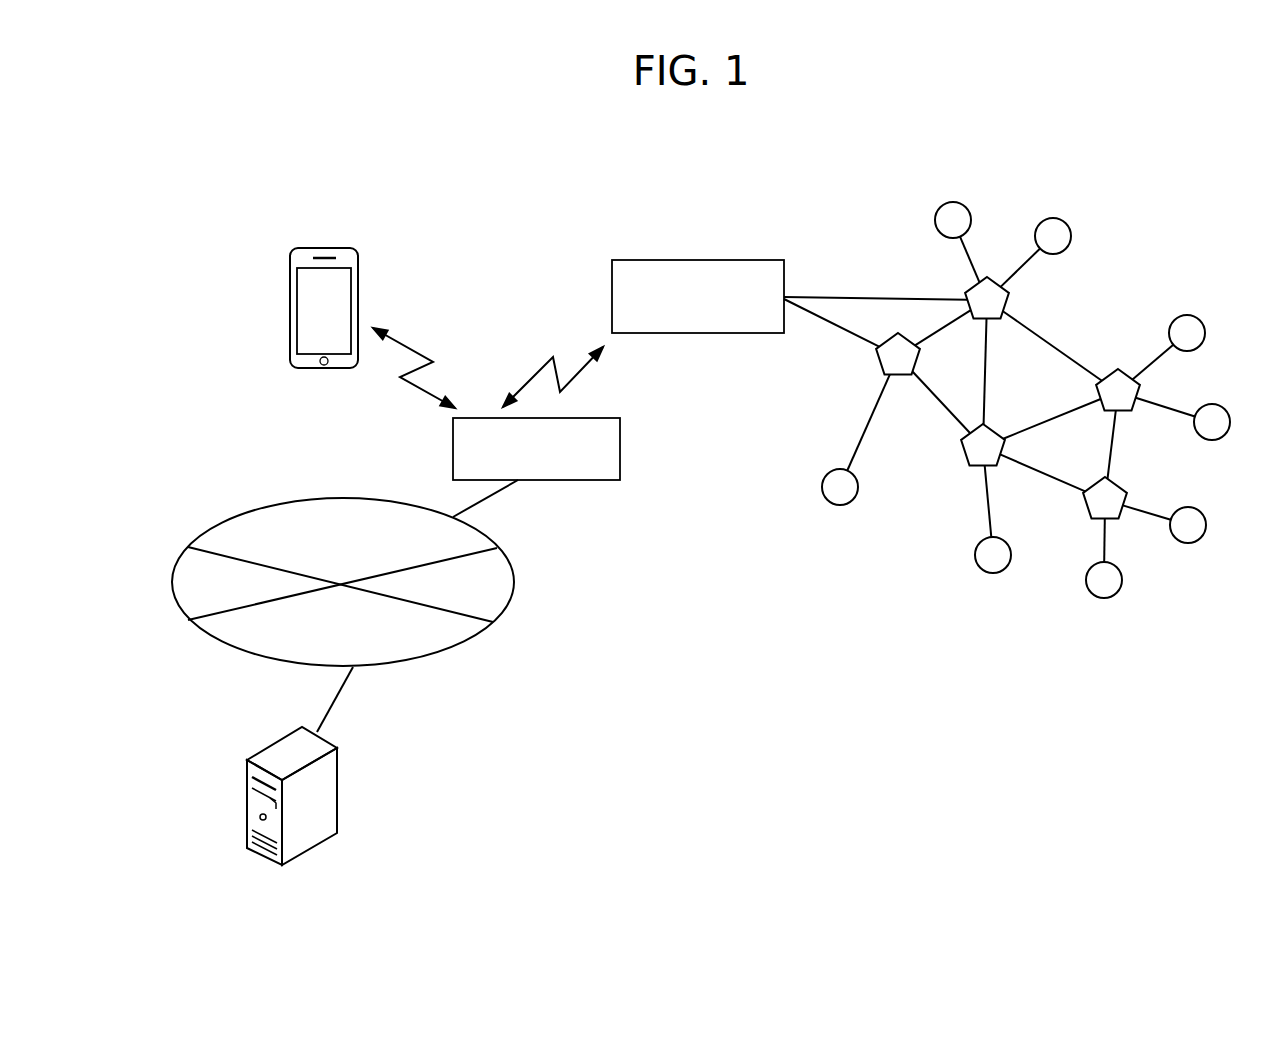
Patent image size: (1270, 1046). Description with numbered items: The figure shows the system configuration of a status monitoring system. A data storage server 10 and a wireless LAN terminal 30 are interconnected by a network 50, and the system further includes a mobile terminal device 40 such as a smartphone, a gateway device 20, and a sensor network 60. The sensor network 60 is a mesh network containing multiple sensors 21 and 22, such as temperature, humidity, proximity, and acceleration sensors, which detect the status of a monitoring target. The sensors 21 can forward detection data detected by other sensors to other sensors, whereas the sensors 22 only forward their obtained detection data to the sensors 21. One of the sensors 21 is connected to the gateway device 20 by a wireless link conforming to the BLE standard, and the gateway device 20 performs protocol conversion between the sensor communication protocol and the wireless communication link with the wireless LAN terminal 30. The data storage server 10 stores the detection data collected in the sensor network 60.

The data storage server 10 is at (337, 786).
The gateway device 20 is at (703, 258).
The sensor 21 is at (874, 362).
The sensor 22 is at (960, 203).
The wireless LAN terminal 30 is at (620, 450).
The mobile terminal device 40 is at (290, 307).
The network 50 is at (517, 582).
The sensor network 60 is at (1007, 409).